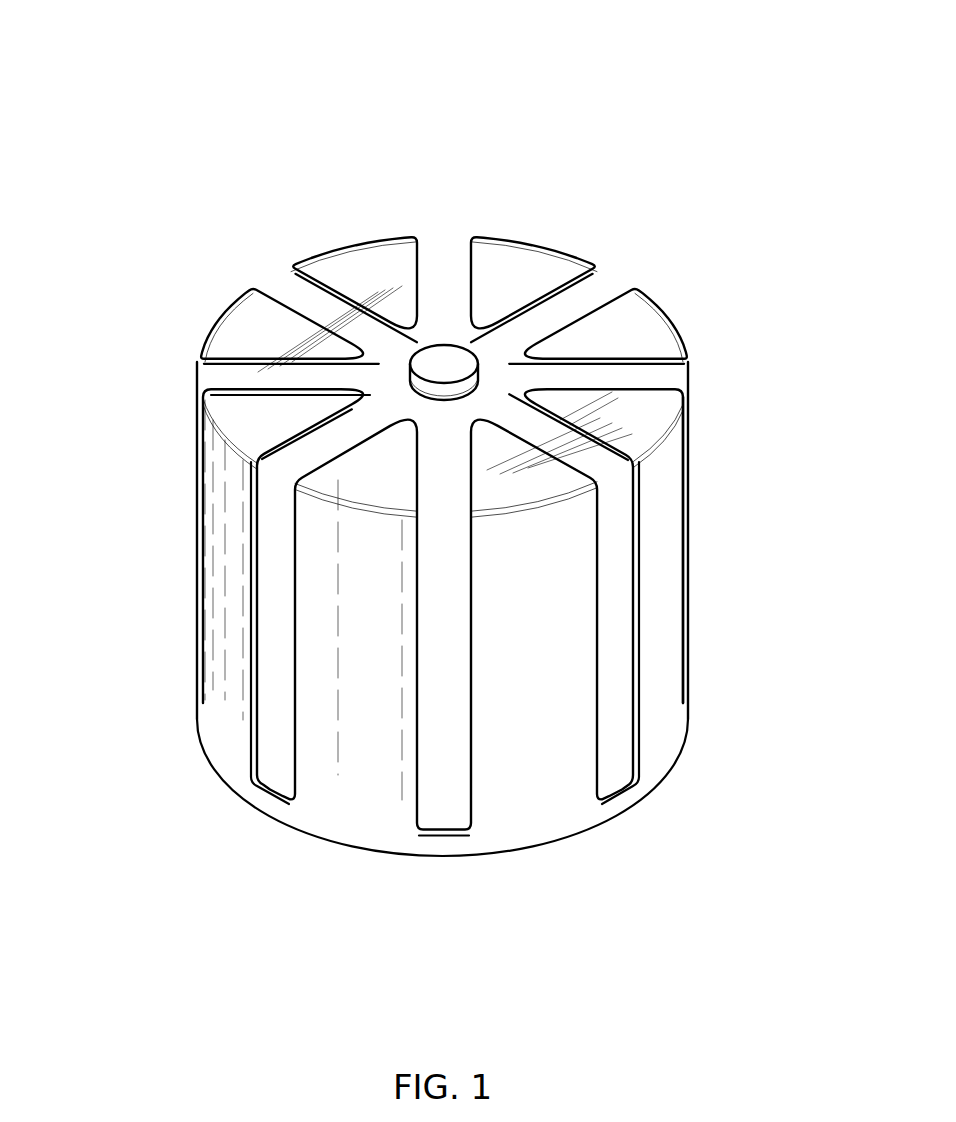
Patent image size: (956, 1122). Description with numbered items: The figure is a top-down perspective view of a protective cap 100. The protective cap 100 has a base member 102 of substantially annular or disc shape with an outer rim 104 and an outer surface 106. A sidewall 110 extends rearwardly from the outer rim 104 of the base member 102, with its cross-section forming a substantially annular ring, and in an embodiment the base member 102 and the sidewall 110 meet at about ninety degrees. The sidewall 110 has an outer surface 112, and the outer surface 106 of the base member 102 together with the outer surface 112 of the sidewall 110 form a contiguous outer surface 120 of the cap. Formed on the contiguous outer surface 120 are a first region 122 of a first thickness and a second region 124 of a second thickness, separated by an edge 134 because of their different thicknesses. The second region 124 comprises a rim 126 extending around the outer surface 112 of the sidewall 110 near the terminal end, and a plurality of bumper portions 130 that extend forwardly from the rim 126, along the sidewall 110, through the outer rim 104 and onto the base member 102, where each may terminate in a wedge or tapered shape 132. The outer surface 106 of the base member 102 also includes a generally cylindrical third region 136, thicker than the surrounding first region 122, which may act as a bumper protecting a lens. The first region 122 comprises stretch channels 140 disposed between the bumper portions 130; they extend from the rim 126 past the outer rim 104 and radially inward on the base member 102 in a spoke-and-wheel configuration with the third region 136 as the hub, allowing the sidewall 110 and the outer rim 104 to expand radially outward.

The protective cap 100 is at (161, 56).
The base member 102 is at (451, 272).
The outer rim 104 is at (612, 280).
The outer surface 106 is at (240, 375).
The sidewall 110 is at (670, 575).
The outer surface 112 is at (272, 648).
The contiguous outer surface 120 is at (280, 292).
The first region 122 is at (430, 777).
The second region 124 is at (362, 722).
The rim 126 is at (532, 828).
The bumper portions 130 is at (381, 258).
The wedge or tapered shape 132 is at (622, 423).
The edge 134 is at (635, 603).
The third region 136 is at (450, 350).
The stretch channels 140 is at (326, 303).